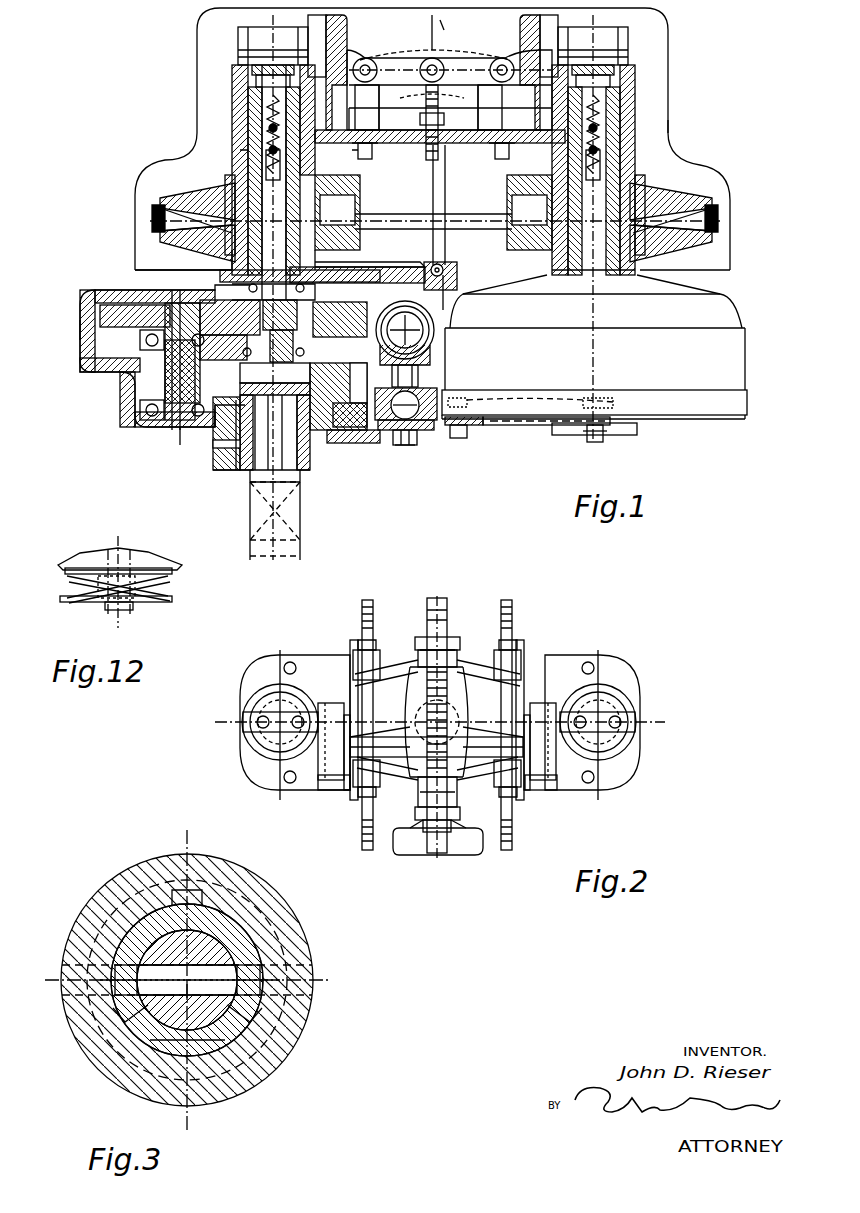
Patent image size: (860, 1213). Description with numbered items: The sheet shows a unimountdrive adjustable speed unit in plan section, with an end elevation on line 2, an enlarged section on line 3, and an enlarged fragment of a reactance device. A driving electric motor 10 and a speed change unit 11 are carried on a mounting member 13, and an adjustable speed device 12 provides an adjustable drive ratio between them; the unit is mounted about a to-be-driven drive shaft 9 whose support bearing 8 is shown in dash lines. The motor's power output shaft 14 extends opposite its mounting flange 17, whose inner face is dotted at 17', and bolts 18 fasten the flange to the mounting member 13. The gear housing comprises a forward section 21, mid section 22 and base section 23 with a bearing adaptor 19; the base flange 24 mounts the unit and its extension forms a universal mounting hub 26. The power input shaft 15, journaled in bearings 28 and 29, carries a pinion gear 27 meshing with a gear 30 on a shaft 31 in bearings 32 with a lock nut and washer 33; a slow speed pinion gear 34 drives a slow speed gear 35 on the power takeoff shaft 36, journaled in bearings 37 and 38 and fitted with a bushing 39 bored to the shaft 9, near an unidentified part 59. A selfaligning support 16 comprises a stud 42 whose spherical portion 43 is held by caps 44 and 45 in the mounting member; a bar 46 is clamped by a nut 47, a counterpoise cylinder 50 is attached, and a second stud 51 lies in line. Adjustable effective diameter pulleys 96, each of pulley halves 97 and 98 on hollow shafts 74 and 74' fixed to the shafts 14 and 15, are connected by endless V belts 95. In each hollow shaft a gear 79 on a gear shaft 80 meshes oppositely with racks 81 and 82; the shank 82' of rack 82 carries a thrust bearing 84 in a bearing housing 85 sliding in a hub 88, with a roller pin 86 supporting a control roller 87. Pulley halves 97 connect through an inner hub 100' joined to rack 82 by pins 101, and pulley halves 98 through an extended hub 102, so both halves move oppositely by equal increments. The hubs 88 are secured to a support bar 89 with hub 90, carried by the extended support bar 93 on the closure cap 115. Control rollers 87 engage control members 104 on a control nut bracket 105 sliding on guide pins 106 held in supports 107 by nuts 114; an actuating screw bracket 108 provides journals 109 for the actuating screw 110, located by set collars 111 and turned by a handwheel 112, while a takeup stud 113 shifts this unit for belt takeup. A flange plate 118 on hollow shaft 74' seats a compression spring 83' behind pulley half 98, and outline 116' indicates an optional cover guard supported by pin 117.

In FIG. 1, the section line 2 is at (625, 35).
In FIG. 1, the section line 3 is at (368, 150).
In FIG. 1, the support bearing 8 is at (302, 530).
In FIG. 1, the drive shaft 9 is at (302, 512).
In FIG. 1, the driving electric motor 10 is at (755, 354).
In FIG. 1, the speed change unit 11 is at (58, 330).
In FIG. 1, the adjustable speed device 12 is at (428, 24).
In FIG. 1, the mounting member 13 is at (480, 428).
In FIG. 1, the power output shaft 14 is at (591, 227).
In FIG. 1, the power input shaft 15 is at (288, 262).
In FIG. 12, the power input shaft 15 is at (133, 606).
In FIG. 1, the selfaligning support 16 is at (440, 486).
In FIG. 1, the mounting flange 17 is at (594, 430).
In FIG. 1, the inner face of mounting flange 17' is at (540, 394).
In FIG. 1, the bolts 18 is at (593, 442).
In FIG. 1, the bearing adaptor 19 is at (322, 272).
In FIG. 1, the forward section 21 is at (82, 298).
In FIG. 1, the mid section 22 is at (82, 352).
In FIG. 1, the base section 23 is at (128, 418).
In FIG. 1, the base flange 24 is at (178, 430).
In FIG. 1, the universal mounting hub 26 is at (215, 430).
In FIG. 1, the pinion gear 27 is at (315, 305).
In FIG. 1, the bearing 28 is at (300, 269).
In FIG. 1, the bearing 29 is at (272, 331).
In FIG. 1, the gear 30 is at (125, 325).
In FIG. 1, the shaft 31 is at (182, 353).
In FIG. 1, the bearings 32 is at (138, 405).
In FIG. 1, the ball bearing lock nut and washer 33 is at (180, 270).
In FIG. 1, the slow speed pinion gear 34 is at (166, 372).
In FIG. 1, the slow speed gear 35 is at (353, 438).
In FIG. 1, the power takeoff shaft 36 is at (261, 416).
In FIG. 1, the bearing 37 is at (338, 366).
In FIG. 1, the bearing 38 is at (213, 448).
In FIG. 1, the bushing 39 is at (242, 472).
In FIG. 1, the stud 42 is at (408, 460).
In FIG. 1, the spherical portion 43 is at (438, 425).
In FIG. 1, the cap 44 is at (380, 440).
In FIG. 1, the cap 45 is at (435, 398).
In FIG. 1, the bar 46 is at (388, 468).
In FIG. 1, the nut 47 is at (396, 490).
In FIG. 1, the cylinder 50 is at (432, 326).
In FIG. 1, the second stud 51 is at (405, 330).
In FIG. 1, the key 59 is at (220, 462).
In FIG. 1, the hollow shaft 74 is at (435, 222).
In FIG. 3, the hollow shaft 74 is at (230, 924).
In FIG. 1, the hollow shaft 74' is at (256, 260).
In FIG. 12, the hollow shaft 74' is at (102, 589).
In FIG. 1, the gears 79 is at (612, 138).
In FIG. 3, the gears 79 is at (248, 958).
In FIG. 3, the gear shafts 80 is at (258, 980).
In FIG. 1, the rack 81 is at (612, 152).
In FIG. 3, the rack 81 is at (232, 1036).
In FIG. 1, the rack 82 is at (432, 181).
In FIG. 3, the rack 82 is at (224, 973).
In FIG. 2, the shank 82' is at (442, 725).
In FIG. 12, the compression spring 83' is at (133, 584).
In FIG. 1, the thrust bearings 84 is at (616, 66).
In FIG. 1, the bearing housings 85 is at (612, 78).
In FIG. 2, the bearing housings 85 is at (626, 710).
In FIG. 1, the roller pins 86 is at (630, 48).
In FIG. 2, the roller pins 86 is at (630, 728).
In FIG. 1, the control rollers 87 is at (350, 85).
In FIG. 2, the control rollers 87 is at (552, 700).
In FIG. 1, the hubs 88 is at (635, 96).
In FIG. 2, the hubs 88 is at (610, 676).
In FIG. 1, the support bar 89 is at (360, 143).
In FIG. 2, the support bar 89 is at (352, 660).
In FIG. 1, the hub 90 is at (485, 143).
In FIG. 1, the extended support bar 93 is at (437, 195).
In FIG. 1, the endless V belts 95 is at (480, 213).
In FIG. 1, the adjustable effective diameter pulleys 96 is at (700, 200).
In FIG. 1, the pulley half 97 is at (700, 176).
In FIG. 1, the pulley half 98 is at (668, 250).
In FIG. 12, the pulley half 98 is at (95, 556).
In FIG. 1, the pulley hub 100' is at (507, 211).
In FIG. 3, the pins 101 is at (318, 998).
In FIG. 1, the extended hub 102 is at (552, 143).
In FIG. 3, the extended hub 102 is at (268, 892).
In FIG. 1, the control members 104 is at (552, 22).
In FIG. 2, the control members 104 is at (540, 785).
In FIG. 1, the control nut bracket 105 is at (470, 55).
In FIG. 2, the control nut bracket 105 is at (405, 730).
In FIG. 1, the guide pins 106 is at (503, 55).
In FIG. 2, the guide pins 106 is at (498, 698).
In FIG. 1, the supports 107 is at (502, 104).
In FIG. 2, the supports 107 is at (352, 795).
In FIG. 1, the actuating screw bracket 108 is at (410, 96).
In FIG. 2, the actuating screw bracket 108 is at (400, 655).
In FIG. 2, the bearing journals 109 is at (458, 795).
In FIG. 1, the actuating screw 110 is at (432, 56).
In FIG. 2, the actuating screw 110 is at (450, 724).
In FIG. 2, the set collars 111 is at (418, 800).
In FIG. 1, the handwheel 112 is at (446, 30).
In FIG. 2, the handwheel 112 is at (424, 846).
In FIG. 1, the takeup stud 113 is at (445, 114).
In FIG. 2, the nuts 114 is at (504, 812).
In FIG. 1, the closure cap 115 is at (400, 264).
In FIG. 1, the cover guard 116' is at (693, 93).
In FIG. 1, the pin 117 is at (446, 274).
In FIG. 12, the flange plate 118 is at (172, 600).